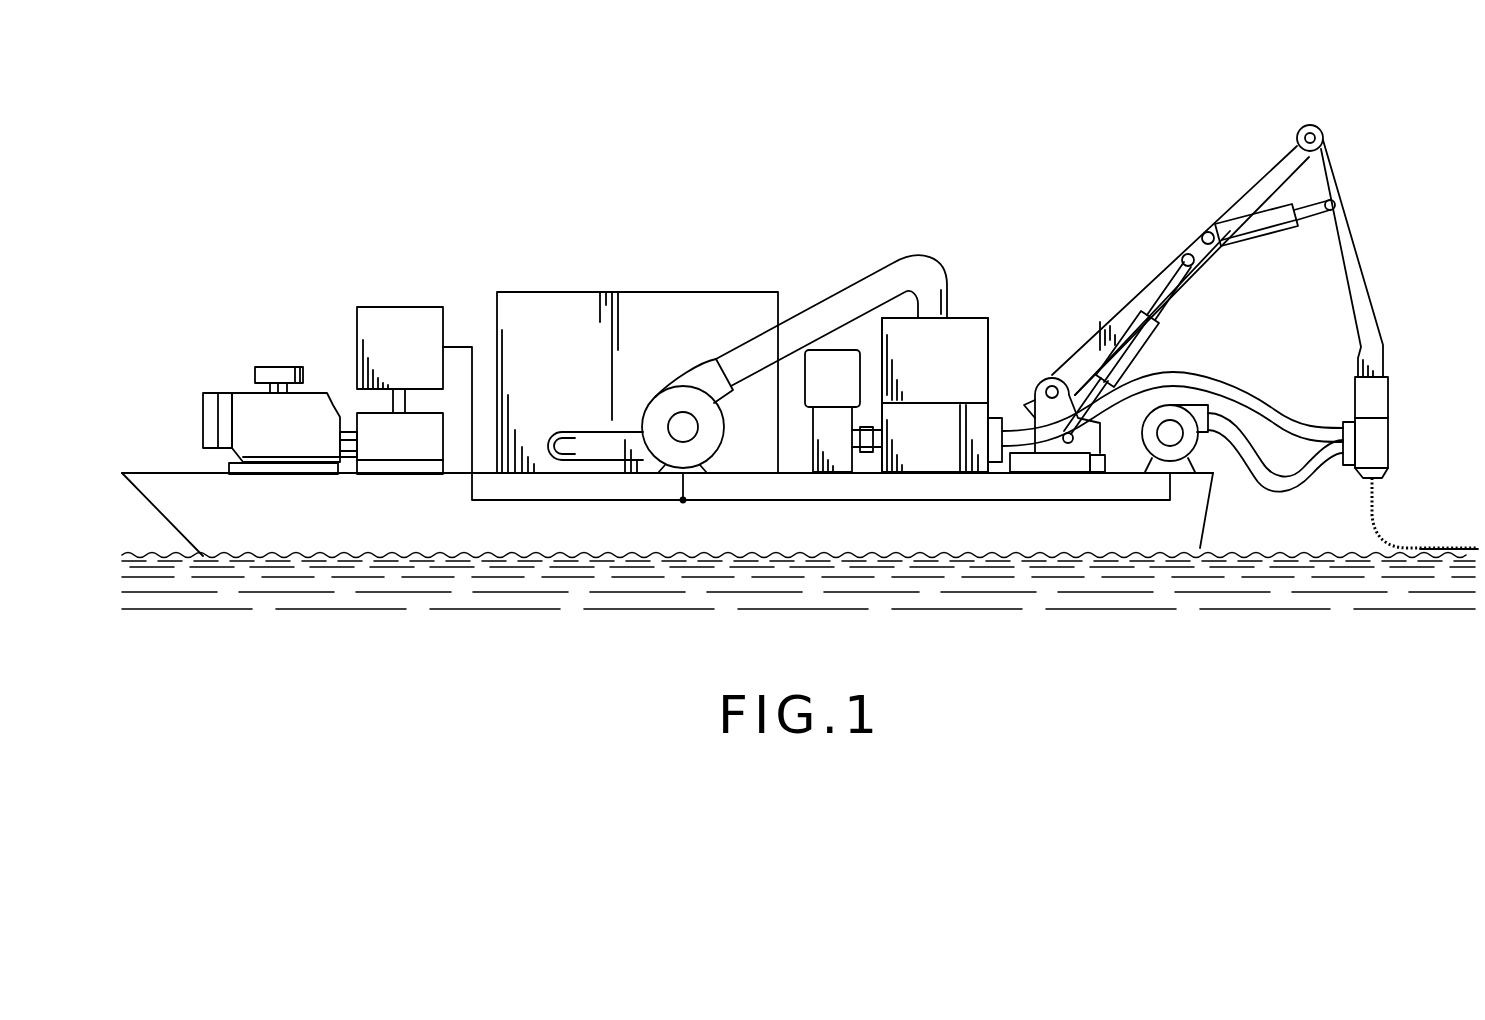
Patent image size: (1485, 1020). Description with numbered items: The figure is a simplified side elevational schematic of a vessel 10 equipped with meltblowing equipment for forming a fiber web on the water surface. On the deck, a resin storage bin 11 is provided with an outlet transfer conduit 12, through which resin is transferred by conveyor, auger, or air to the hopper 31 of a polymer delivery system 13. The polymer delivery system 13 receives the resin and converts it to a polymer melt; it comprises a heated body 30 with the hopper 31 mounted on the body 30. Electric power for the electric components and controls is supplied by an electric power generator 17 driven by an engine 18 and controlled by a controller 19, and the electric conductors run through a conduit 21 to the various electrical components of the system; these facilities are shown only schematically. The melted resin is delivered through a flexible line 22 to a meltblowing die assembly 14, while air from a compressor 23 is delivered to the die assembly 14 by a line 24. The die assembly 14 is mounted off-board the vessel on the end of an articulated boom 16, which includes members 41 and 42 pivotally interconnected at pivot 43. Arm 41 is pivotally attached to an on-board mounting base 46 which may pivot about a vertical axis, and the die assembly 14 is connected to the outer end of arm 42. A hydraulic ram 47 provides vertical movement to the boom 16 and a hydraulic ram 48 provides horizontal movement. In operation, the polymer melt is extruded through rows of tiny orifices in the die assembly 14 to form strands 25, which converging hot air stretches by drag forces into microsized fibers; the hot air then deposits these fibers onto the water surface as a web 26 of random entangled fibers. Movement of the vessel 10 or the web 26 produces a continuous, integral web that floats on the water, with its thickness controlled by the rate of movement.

The vessel 10 is at (159, 462).
The resin storage bin 11 is at (637, 313).
The outlet transfer conduit 12 is at (849, 302).
The polymer delivery system 13 is at (942, 333).
The meltblowing die assembly 14 is at (1404, 399).
The articulated boom 16 is at (1278, 137).
The electric power generator 17 is at (403, 445).
The engine 18 is at (277, 415).
The controller 19 is at (388, 338).
The conduit 21 is at (459, 345).
The flexible line 22 is at (1240, 382).
The compressor 23 is at (1173, 430).
The line 24 is at (1281, 484).
The strands 25 is at (1368, 512).
The web 26 is at (1431, 545).
The heated body 30 is at (953, 448).
The hopper 31 is at (917, 369).
The arm 41 is at (1163, 263).
The arm 42 is at (1346, 205).
The pivot 43 is at (1314, 125).
The on-board mounting base 46 is at (1052, 404).
The hydraulic ram 47 is at (1133, 337).
The hydraulic ram 48 is at (1255, 223).